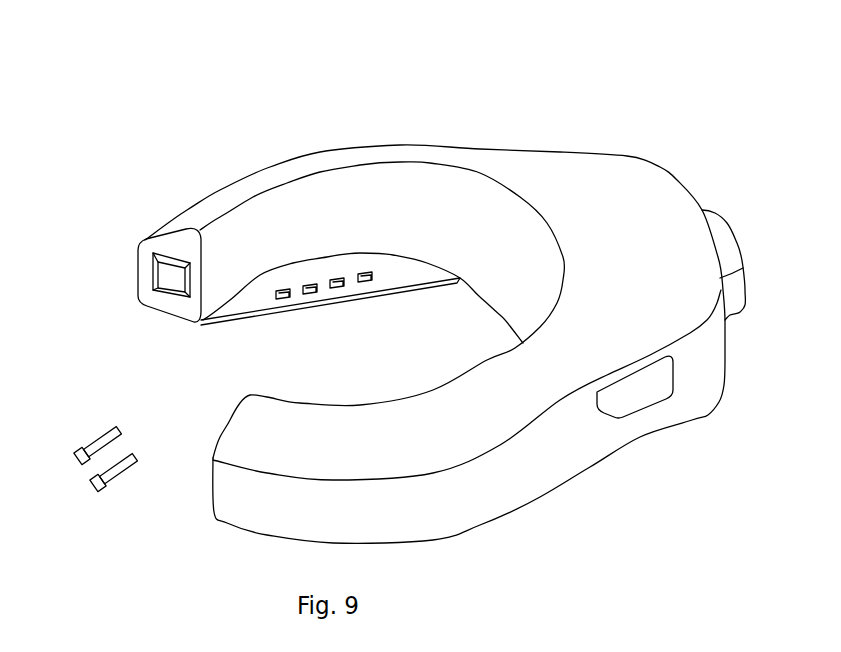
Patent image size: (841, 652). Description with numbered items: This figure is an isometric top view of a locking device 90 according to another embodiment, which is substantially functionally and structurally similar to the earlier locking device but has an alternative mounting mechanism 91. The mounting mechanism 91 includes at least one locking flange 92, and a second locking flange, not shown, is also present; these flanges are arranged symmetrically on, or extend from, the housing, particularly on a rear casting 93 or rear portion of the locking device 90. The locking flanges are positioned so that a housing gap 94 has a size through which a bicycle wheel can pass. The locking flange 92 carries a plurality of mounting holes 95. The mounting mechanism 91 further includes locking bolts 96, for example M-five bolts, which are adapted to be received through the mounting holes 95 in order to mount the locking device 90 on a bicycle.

The locking device 90 is at (402, 288).
The mounting mechanism 91 is at (386, 296).
The locking flange 92 is at (240, 303).
The rear casting 93 is at (155, 309).
The housing gap 94 is at (273, 348).
The mounting holes 95 is at (312, 295).
The locking bolts 96 is at (77, 455).